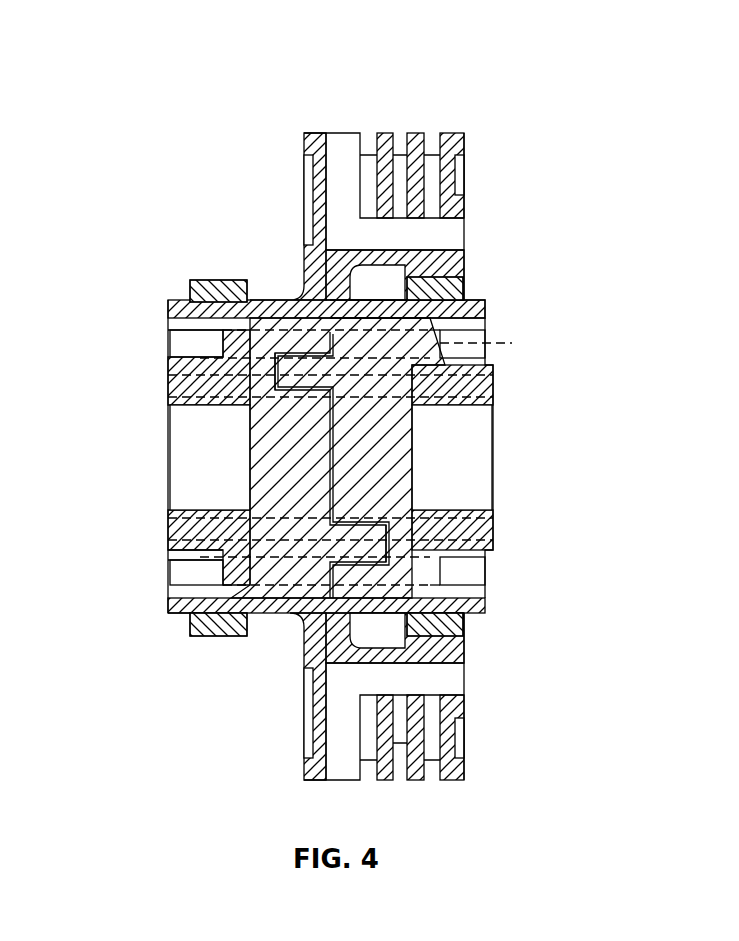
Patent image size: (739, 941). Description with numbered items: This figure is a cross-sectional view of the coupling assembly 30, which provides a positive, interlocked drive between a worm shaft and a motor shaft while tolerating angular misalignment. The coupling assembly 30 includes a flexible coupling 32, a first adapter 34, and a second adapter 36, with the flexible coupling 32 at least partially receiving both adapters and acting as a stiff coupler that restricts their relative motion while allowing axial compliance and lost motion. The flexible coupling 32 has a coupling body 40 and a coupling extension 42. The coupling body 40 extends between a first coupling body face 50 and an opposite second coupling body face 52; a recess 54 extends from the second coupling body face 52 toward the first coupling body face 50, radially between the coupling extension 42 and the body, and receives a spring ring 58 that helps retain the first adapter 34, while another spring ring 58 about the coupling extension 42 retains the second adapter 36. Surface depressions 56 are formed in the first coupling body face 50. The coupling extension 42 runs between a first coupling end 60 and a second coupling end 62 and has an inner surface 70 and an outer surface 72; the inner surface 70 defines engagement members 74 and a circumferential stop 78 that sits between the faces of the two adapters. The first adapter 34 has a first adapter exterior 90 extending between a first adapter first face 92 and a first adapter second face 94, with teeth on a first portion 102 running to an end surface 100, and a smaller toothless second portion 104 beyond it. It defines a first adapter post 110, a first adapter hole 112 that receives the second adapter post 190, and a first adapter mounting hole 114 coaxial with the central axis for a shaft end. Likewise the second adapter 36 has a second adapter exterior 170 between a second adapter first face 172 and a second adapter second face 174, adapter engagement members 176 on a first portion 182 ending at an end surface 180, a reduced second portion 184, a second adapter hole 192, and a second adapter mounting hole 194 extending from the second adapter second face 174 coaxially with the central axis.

The coupling assembly 30 is at (305, 432).
The flexible coupling 32 is at (479, 795).
The first adapter 34 is at (486, 467).
The second adapter 36 is at (158, 557).
The coupling body 40 is at (394, 734).
The coupling extension 42 is at (266, 293).
The first coupling body face 50 is at (386, 193).
The second coupling body face 52 is at (464, 142).
The recess 54 is at (390, 287).
The surface depression 56 is at (304, 196).
The spring ring 58 is at (344, 264).
The first coupling end 60 is at (326, 299).
The second coupling end 62 is at (487, 308).
The inner surface 70 is at (186, 360).
The outer surface 72 is at (168, 303).
The engagement members 74 is at (196, 344).
The stop 78 is at (340, 330).
The first adapter exterior 90 is at (490, 346).
The first adapter first face 92 is at (237, 402).
The first adapter second face 94 is at (488, 372).
The end surface 100 is at (440, 578).
The first portion 102 is at (398, 572).
The second portion 104 is at (478, 380).
The first adapter post 110 is at (430, 193).
The first adapter hole 112 is at (392, 537).
The first adapter mounting hole 114 is at (476, 407).
The second adapter exterior 170 is at (250, 590).
The second adapter first face 172 is at (318, 578).
The second adapter second face 174 is at (160, 564).
The adapter engagement members 176 is at (235, 284).
The end surface 180 is at (168, 593).
The first portion 182 is at (236, 592).
The second portion 184 is at (215, 392).
The second adapter post 190 is at (316, 642).
The second adapter hole 192 is at (258, 352).
The second adapter mounting hole 194 is at (215, 407).